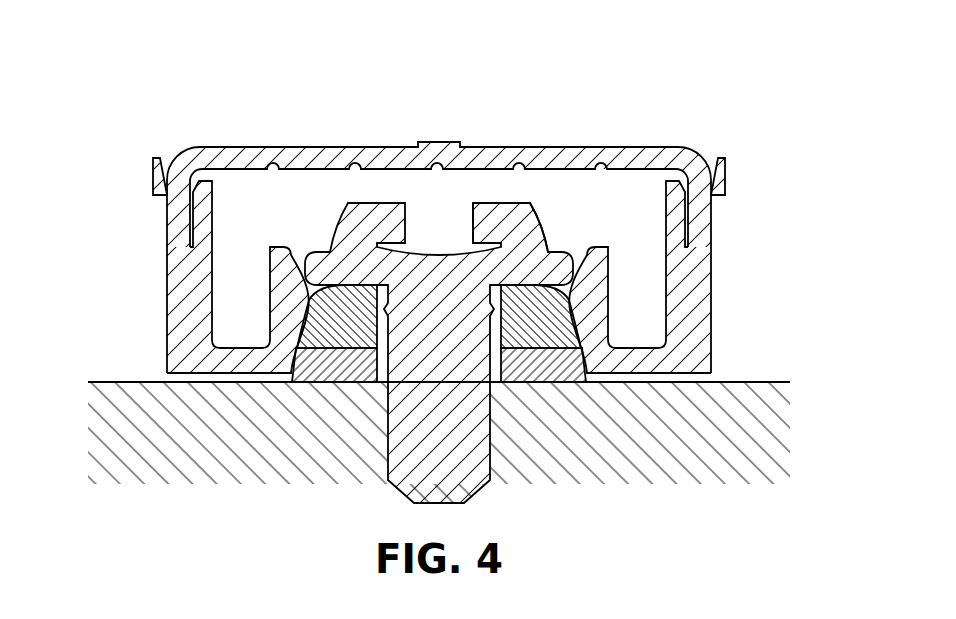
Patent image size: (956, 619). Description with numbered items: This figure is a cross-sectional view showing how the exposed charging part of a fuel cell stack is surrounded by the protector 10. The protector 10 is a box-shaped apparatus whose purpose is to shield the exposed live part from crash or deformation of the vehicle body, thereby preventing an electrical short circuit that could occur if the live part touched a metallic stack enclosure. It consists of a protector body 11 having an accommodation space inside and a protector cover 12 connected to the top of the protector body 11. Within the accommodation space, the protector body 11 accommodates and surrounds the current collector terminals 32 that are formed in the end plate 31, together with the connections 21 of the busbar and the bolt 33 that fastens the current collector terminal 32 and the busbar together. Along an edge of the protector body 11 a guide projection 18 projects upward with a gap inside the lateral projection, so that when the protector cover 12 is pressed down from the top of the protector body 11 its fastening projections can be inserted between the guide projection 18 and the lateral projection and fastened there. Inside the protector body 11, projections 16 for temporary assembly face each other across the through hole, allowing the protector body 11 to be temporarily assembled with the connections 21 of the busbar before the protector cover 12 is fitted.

The protector 10 is at (476, 199).
The protector body 11 is at (165, 329).
The protector cover 12 is at (301, 155).
The projections for temporary assembly 16 is at (561, 254).
The guide projection 18 is at (202, 176).
The connections of the busbar 21 is at (550, 320).
The end plate 31 is at (750, 380).
The current collector terminals 32 is at (537, 380).
The bolt 33 is at (447, 286).